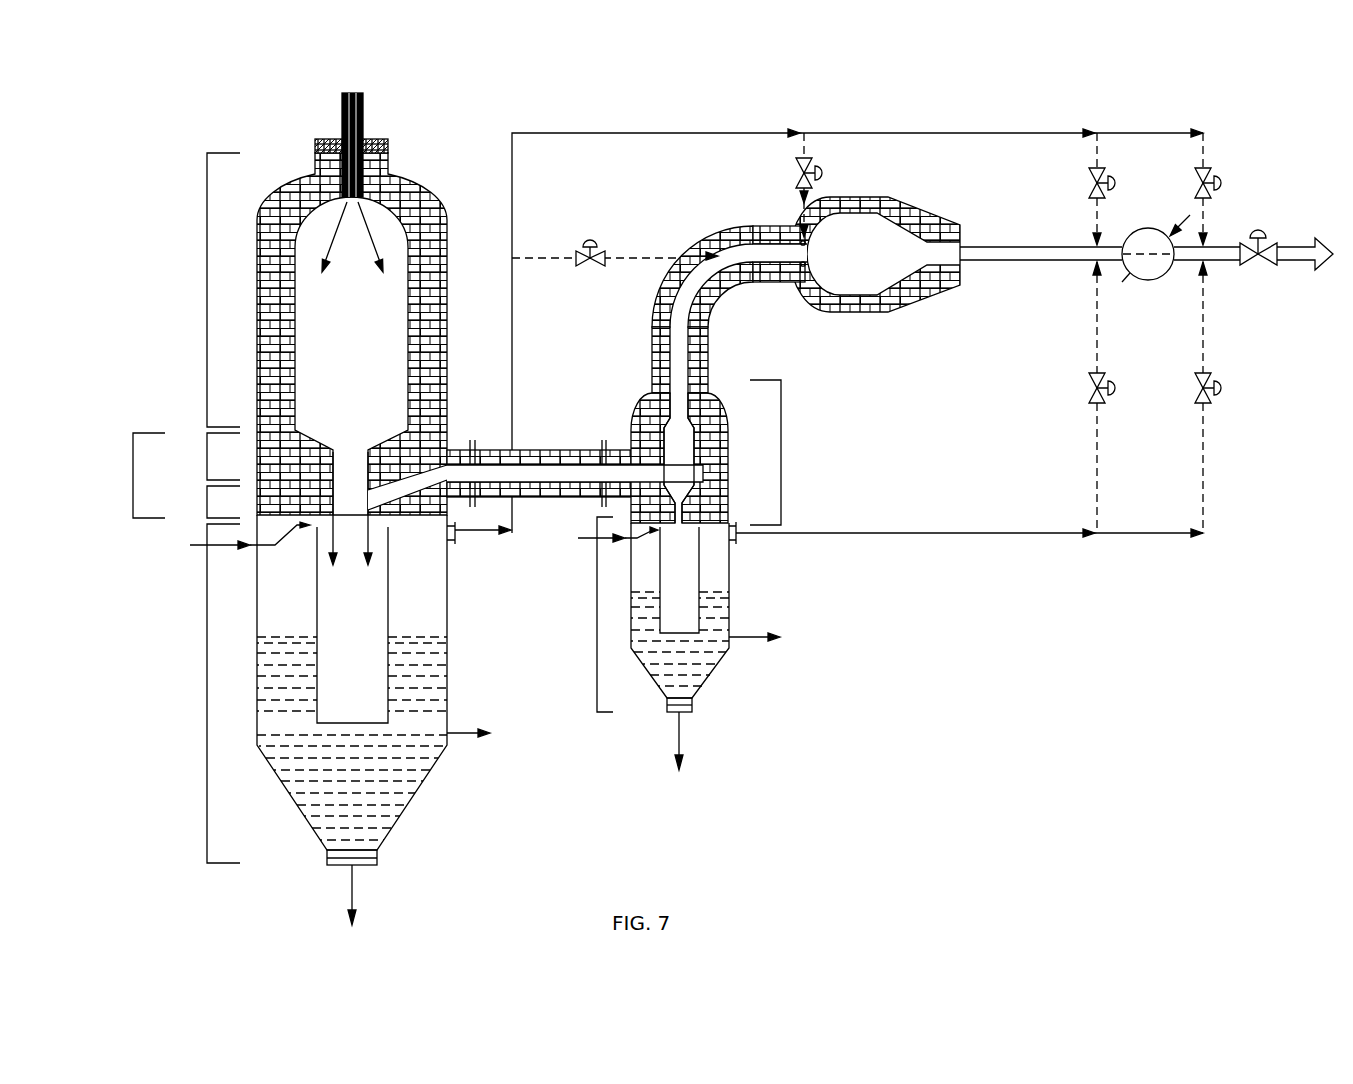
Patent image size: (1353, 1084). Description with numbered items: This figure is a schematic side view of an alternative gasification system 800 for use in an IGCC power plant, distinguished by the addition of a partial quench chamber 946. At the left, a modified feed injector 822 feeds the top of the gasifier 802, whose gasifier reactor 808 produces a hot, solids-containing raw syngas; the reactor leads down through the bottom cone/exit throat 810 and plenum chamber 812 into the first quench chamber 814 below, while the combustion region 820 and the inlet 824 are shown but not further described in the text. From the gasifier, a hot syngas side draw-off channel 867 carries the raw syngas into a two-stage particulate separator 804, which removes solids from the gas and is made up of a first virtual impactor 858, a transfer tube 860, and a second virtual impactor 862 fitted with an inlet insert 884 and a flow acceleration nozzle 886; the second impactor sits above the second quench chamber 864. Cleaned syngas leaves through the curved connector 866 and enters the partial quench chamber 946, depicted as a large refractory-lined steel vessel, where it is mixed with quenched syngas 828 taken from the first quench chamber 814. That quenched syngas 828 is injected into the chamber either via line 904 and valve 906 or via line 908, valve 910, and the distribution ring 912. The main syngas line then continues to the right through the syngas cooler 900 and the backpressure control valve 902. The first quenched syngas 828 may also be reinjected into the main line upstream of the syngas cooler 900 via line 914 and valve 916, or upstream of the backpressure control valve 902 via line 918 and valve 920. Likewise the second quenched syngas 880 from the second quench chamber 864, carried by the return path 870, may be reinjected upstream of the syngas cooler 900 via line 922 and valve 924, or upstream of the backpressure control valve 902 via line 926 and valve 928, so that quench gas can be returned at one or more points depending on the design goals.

The gasification system 800 is at (185, 115).
The gasifier 802 is at (172, 330).
The two-stage particulate separator 804 is at (803, 483).
The gasifier reactor 808 is at (207, 270).
The bottom cone/exit throat 810 is at (207, 456).
The plenum chamber 812 is at (207, 501).
The first quench chamber 814 is at (207, 672).
The combustion chamber 820 is at (372, 207).
The modified feed injector 822 is at (341, 104).
The quench water inlet 824 is at (195, 548).
The quenched syngas 828 is at (463, 535).
The first virtual impactor 858 is at (133, 472).
The transfer tube 860 is at (523, 440).
The second virtual impactor 862 is at (784, 414).
The second quench chamber 864 is at (598, 627).
The curved connector 866 is at (716, 237).
The hot syngas side draw-off channel 867 is at (418, 485).
The recycle line 870 is at (840, 543).
The second quenched syngas 880 is at (743, 537).
The inlet insert 884 is at (673, 460).
The flow acceleration nozzle 886 is at (687, 500).
The syngas cooler 900 is at (1154, 281).
The backpressure control valve 902 is at (1258, 230).
The line 904 is at (645, 262).
The valve 906 is at (590, 240).
The line 908 is at (800, 190).
The valve 910 is at (797, 165).
The distribution ring 912 is at (806, 245).
The line 914 is at (1094, 205).
The valve 916 is at (1090, 172).
The line 918 is at (1196, 203).
The valve 920 is at (1196, 172).
The line 922 is at (1095, 457).
The valve 924 is at (1090, 385).
The line 926 is at (1201, 457).
The valve 928 is at (1196, 385).
The partial quench chamber 946 is at (899, 186).